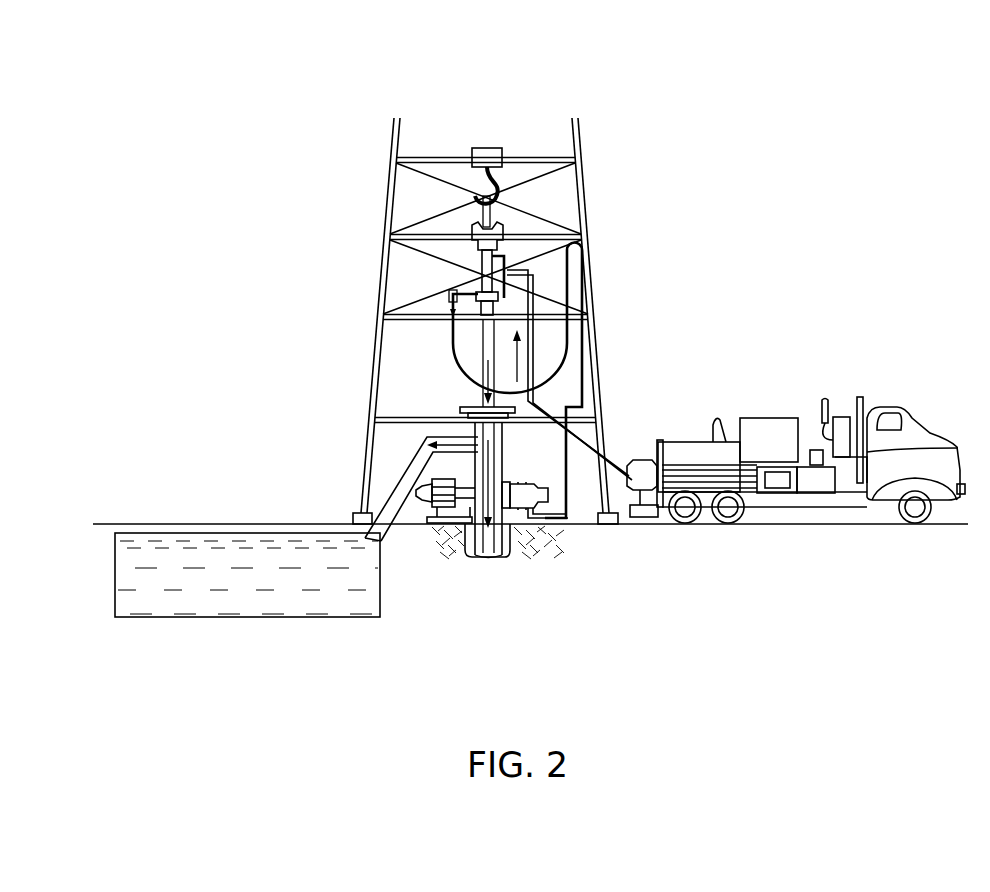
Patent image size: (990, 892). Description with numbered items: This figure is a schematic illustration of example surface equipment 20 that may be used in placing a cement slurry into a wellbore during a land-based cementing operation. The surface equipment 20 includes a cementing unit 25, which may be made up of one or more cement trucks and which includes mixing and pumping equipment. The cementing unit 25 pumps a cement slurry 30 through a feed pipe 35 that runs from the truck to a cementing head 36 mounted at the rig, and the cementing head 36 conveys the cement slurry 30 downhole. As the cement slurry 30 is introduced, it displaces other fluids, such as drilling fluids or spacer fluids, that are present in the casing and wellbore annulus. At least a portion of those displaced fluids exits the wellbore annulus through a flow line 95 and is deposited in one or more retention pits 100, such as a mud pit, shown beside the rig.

The surface equipment 20 is at (830, 158).
The cementing unit 25 is at (850, 514).
The cement slurry 30 is at (483, 352).
The feed pipe 35 is at (563, 433).
The cementing head 36 is at (526, 226).
The flow line 95 is at (405, 518).
The retention pit 100 is at (167, 618).